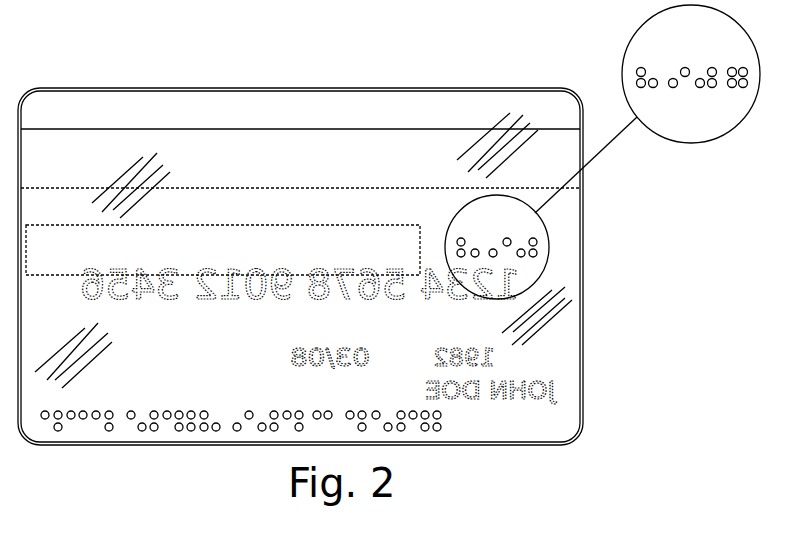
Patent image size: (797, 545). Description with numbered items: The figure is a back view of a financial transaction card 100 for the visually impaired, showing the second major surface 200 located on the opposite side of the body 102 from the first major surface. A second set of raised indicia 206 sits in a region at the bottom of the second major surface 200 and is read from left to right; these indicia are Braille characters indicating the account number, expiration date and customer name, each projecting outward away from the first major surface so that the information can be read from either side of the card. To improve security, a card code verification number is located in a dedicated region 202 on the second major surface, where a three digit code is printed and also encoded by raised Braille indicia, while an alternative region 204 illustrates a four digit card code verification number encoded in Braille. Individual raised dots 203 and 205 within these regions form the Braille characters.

The financial transaction card 100 is at (218, 88).
The body 102 is at (470, 88).
The second major surface 200 is at (365, 102).
The CCV region 202 is at (447, 232).
The raised braille dot 203 is at (546, 242).
The alternative region 204 is at (635, 38).
The raised braille dot (enlarged) 205 is at (634, 78).
The second set of raised indicia 206 is at (154, 431).